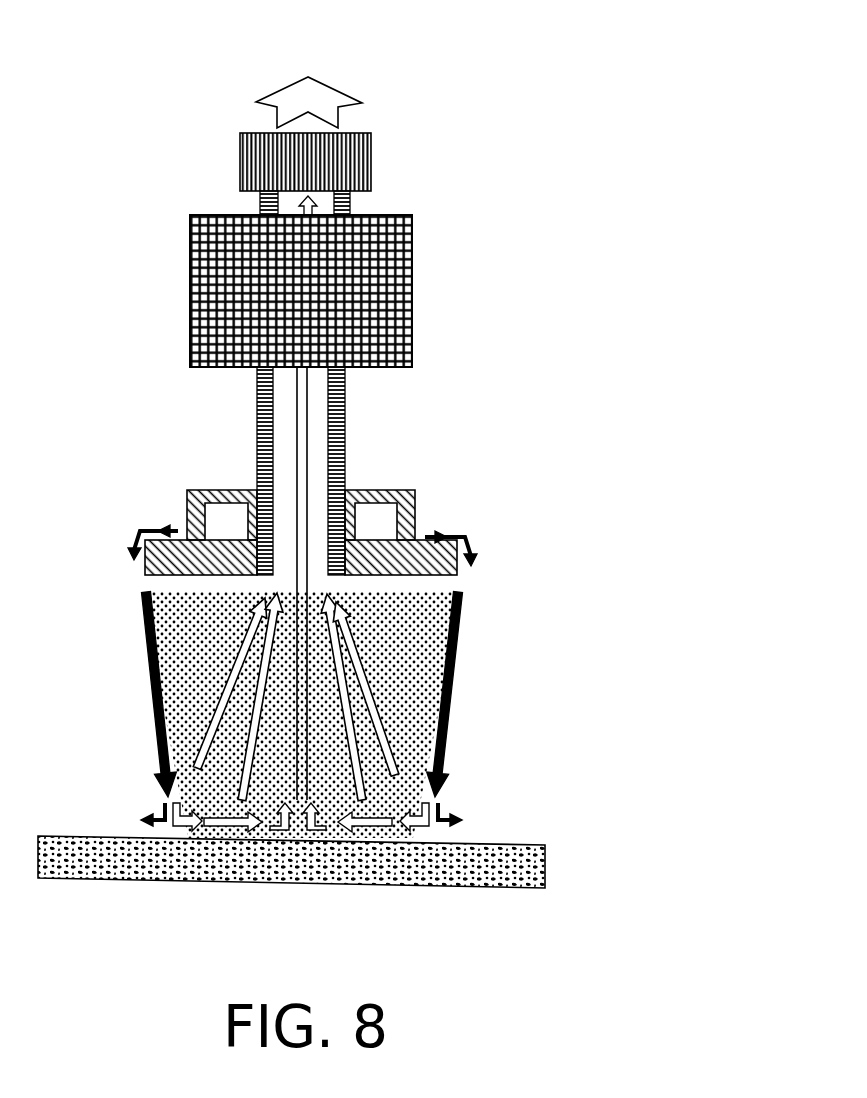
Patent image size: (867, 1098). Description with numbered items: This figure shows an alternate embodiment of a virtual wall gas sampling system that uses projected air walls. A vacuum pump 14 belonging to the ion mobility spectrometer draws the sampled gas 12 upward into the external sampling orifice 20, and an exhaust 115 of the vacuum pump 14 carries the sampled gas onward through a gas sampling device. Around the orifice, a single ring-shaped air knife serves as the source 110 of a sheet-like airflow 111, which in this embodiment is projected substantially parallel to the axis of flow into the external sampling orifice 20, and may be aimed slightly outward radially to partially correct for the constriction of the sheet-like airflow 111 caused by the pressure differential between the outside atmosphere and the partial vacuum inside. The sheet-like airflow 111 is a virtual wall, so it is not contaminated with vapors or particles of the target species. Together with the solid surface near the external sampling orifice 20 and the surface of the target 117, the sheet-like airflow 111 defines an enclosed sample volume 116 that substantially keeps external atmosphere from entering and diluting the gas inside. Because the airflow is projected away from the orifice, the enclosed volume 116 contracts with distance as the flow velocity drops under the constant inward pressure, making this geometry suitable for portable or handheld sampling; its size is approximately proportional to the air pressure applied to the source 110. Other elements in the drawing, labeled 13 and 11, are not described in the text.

The exhaust 115 is at (343, 92).
The vacuum pump 14 is at (372, 155).
The transducer block 13 is at (412, 282).
The ultrasonic horn columns 11 is at (345, 415).
The source 110 is at (415, 512).
The external sampling orifice 20 is at (273, 590).
The sheet-like airflow 111 is at (463, 620).
The enclosed sample volume 116 is at (400, 673).
The sampled gas 12 is at (370, 723).
The target 117 is at (553, 870).